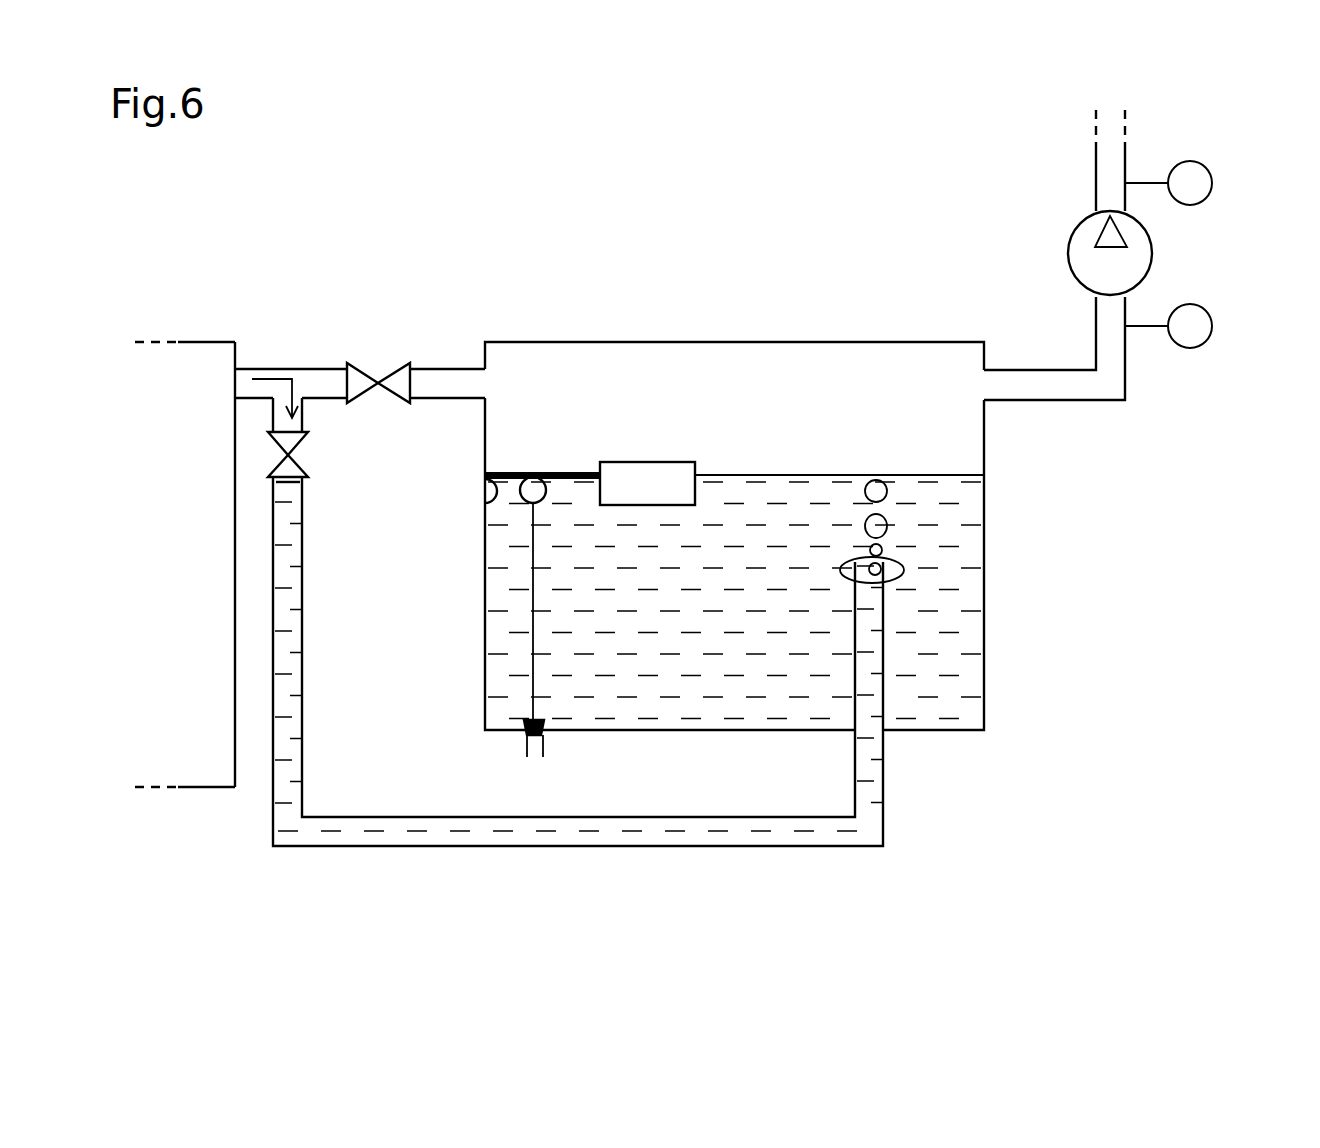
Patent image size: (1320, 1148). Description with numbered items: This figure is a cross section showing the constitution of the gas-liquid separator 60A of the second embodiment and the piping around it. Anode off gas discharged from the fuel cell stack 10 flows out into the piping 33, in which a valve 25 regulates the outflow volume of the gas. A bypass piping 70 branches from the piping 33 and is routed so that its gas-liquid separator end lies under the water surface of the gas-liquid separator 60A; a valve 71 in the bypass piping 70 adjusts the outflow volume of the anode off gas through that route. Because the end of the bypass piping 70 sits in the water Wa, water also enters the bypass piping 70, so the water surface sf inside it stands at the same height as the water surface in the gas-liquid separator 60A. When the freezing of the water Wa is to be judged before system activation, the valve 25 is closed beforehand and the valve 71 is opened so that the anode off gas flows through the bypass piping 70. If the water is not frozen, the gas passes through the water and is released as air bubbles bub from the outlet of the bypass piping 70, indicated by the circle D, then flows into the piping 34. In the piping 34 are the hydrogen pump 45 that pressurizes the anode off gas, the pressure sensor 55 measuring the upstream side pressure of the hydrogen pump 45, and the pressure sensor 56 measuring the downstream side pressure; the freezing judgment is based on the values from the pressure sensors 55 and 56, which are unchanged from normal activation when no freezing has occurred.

The fuel cell stack 10 is at (211, 388).
The valve 25 is at (383, 363).
The piping 33 is at (455, 369).
The valve 71 is at (302, 462).
The water surface sf is at (292, 482).
The bypass piping 70 is at (513, 848).
The gas-liquid separator 60A is at (545, 334).
The water Wa is at (950, 572).
The air bubbles bub is at (884, 484).
The circle indicating the outlet of the bypass piping D is at (890, 582).
The piping 34 is at (1127, 378).
The hydrogen pump 45 is at (1152, 250).
The pressure sensor 55 is at (1212, 316).
The pressure sensor 56 is at (1212, 173).